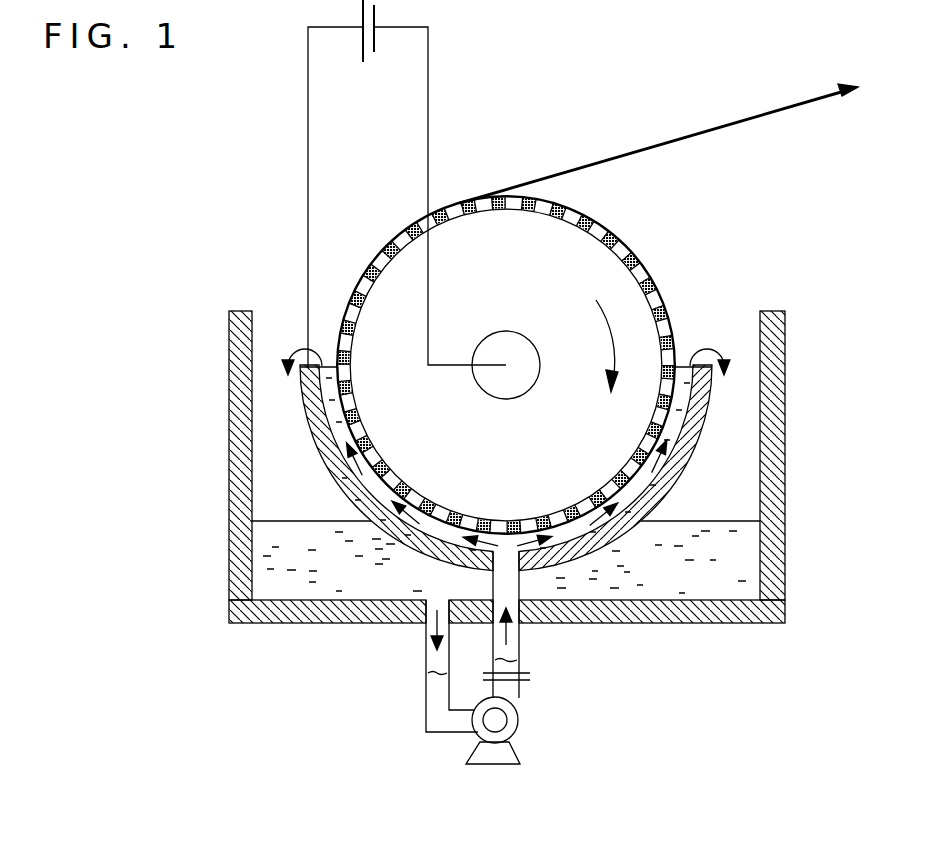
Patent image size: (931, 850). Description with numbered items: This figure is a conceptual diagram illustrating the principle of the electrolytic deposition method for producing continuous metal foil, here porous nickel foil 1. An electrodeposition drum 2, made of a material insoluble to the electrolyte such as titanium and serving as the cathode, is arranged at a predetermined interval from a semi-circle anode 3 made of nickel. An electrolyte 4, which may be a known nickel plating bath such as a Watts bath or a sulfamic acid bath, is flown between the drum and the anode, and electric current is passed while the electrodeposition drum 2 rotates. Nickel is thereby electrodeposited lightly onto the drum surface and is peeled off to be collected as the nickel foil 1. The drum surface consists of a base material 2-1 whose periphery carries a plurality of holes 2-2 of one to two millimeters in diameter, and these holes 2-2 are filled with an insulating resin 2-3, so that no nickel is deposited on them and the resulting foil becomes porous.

The nickel foil 1 is at (713, 126).
The electrodeposition drum 2 is at (751, 190).
The base material 2-1 is at (627, 248).
The holes 2-2 is at (633, 262).
The insulating resin 2-3 is at (648, 285).
The semi-circle anode 3 is at (710, 412).
The electrolyte 4 is at (680, 468).